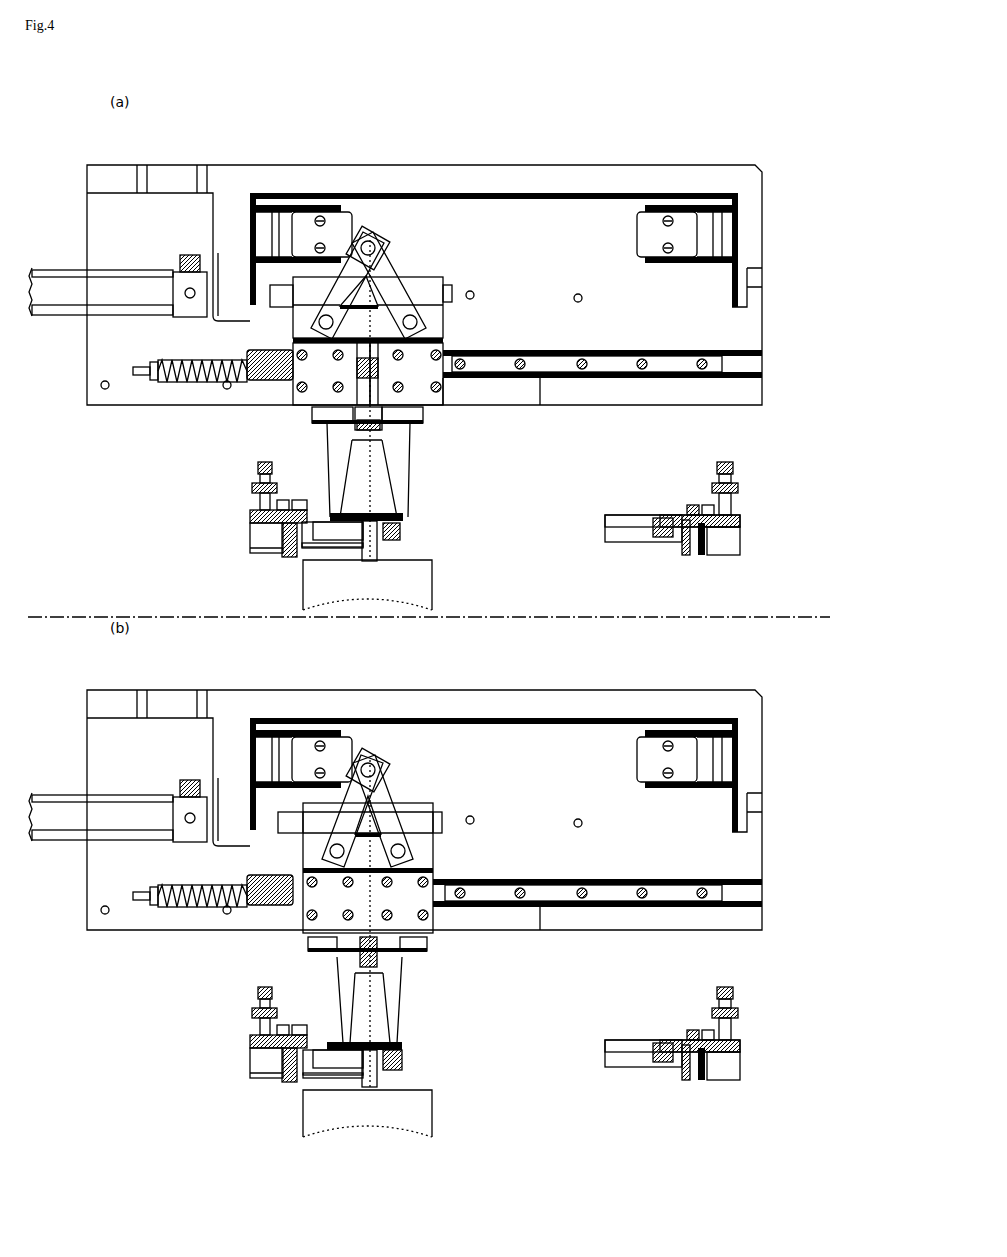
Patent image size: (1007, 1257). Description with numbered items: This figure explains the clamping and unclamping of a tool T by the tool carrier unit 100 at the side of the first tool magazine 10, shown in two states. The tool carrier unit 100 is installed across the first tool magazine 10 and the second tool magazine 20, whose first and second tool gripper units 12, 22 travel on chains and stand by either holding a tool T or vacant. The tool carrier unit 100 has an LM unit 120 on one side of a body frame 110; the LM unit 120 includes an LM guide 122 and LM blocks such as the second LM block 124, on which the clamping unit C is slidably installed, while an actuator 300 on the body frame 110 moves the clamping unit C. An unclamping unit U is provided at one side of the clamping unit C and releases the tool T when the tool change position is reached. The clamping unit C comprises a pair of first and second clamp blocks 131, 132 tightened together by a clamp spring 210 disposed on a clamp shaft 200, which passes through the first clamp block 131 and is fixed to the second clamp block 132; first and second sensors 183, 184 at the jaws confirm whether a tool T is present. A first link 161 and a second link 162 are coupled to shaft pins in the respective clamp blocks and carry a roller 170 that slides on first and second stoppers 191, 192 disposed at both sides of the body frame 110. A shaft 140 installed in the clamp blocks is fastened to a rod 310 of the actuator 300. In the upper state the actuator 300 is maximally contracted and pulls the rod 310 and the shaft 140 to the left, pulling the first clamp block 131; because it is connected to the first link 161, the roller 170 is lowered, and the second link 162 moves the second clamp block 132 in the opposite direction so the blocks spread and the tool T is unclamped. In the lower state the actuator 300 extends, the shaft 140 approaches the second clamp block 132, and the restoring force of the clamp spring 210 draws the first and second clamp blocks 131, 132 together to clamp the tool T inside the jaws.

The tool carrier unit 100 is at (368, 138).
The body frame 110 is at (525, 165).
The LM unit 120 is at (597, 666).
The LM guide 122 is at (540, 380).
The second LM block 124 is at (442, 380).
The first clamp block 131 is at (330, 372).
The second clamp block 132 is at (415, 398).
The shaft 140 is at (282, 285).
The first link 161 is at (400, 256).
The second link 162 is at (400, 269).
The roller 170 is at (378, 239).
The first sensor 183 is at (327, 428).
The second sensor 184 is at (407, 958).
The first stopper 191 is at (350, 235).
The second stopper 192 is at (650, 215).
The clamp shaft 200 is at (179, 657).
The clamp spring 210 is at (190, 380).
The actuator 300 is at (138, 283).
The rod 310 is at (257, 323).
The first tool magazine 10 is at (260, 792).
The first tool gripper unit 12 is at (287, 555).
The second tool magazine 20 is at (673, 792).
The second tool gripper unit 22 is at (665, 548).
The clamping unit C is at (392, 747).
The tool T is at (430, 590).
The unclamping unit U is at (343, 197).